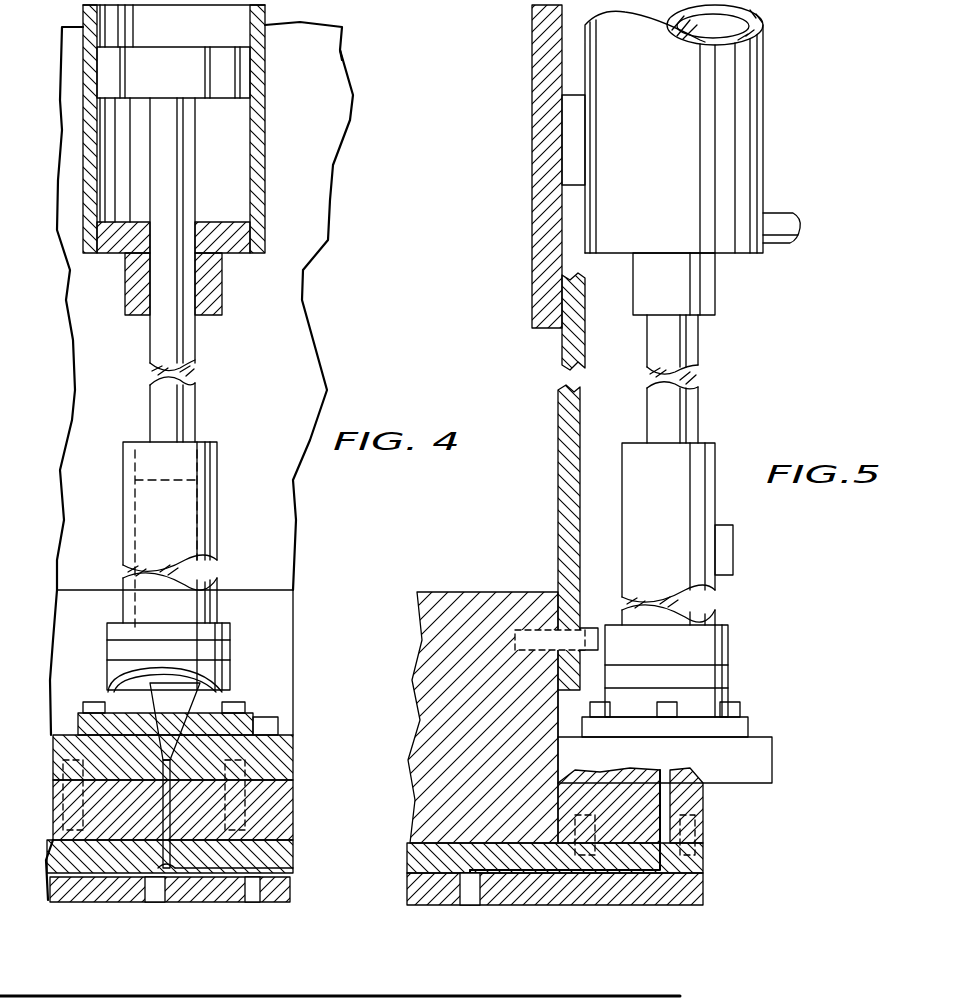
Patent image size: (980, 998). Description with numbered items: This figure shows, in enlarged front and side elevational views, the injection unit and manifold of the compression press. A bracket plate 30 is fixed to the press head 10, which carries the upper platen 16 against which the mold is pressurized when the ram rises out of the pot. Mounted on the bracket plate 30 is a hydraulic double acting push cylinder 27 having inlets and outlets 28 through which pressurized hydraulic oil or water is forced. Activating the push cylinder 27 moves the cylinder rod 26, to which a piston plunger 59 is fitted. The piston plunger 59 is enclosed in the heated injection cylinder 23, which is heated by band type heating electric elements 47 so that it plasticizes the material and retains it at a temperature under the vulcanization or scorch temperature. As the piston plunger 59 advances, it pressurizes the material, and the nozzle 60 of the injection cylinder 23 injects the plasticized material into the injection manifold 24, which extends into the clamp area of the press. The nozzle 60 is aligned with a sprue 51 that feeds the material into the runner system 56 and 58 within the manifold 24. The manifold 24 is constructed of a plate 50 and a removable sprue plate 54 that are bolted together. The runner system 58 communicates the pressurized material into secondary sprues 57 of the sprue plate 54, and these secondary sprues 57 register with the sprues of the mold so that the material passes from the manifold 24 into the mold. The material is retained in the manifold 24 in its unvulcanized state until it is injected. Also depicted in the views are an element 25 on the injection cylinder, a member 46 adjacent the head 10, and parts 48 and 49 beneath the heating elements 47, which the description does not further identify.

In FIG. 4, the head member 10 is at (283, 603).
In FIG. 5, the head member 10 is at (477, 598).
In FIG. 5, the platen 16 is at (405, 840).
In FIG. 4, the injection cylinder 23 is at (210, 527).
In FIG. 5, the injection cylinder 23 is at (715, 440).
In FIG. 5, the injection manifold 24 is at (612, 735).
In FIG. 5, the stop button 25 is at (733, 540).
In FIG. 4, the cylinder rod 26 is at (187, 350).
In FIG. 5, the cylinder rod 26 is at (690, 348).
In FIG. 4, the hydraulic double acting push cylinder 27 is at (258, 200).
In FIG. 5, the hydraulic double acting push cylinder 27 is at (760, 95).
In FIG. 5, the inlets and outlets 28 is at (775, 215).
In FIG. 4, the bracket plate 30 is at (300, 270).
In FIG. 5, the bracket plate 30 is at (537, 198).
In FIG. 5, the vertical plate 46 is at (585, 635).
In FIG. 4, the band type heating electric elements 47 is at (225, 660).
In FIG. 5, the band type heating electric elements 47 is at (720, 658).
In FIG. 5, the mounting plate 48 is at (740, 730).
In FIG. 5, the bolts 49 is at (735, 708).
In FIG. 5, the plate 50 is at (762, 762).
In FIG. 4, the sprue 51 is at (165, 817).
In FIG. 5, the sprue 51 is at (665, 808).
In FIG. 5, the sprue plate 54 is at (700, 877).
In FIG. 5, the runner system 56 is at (555, 830).
In FIG. 4, the secondary sprues 57 is at (262, 895).
In FIG. 5, the secondary sprues 57 is at (500, 890).
In FIG. 4, the runner system 58 is at (210, 860).
In FIG. 4, the piston plunger 59 is at (240, 88).
In FIG. 4, the nozzle 60 is at (150, 745).